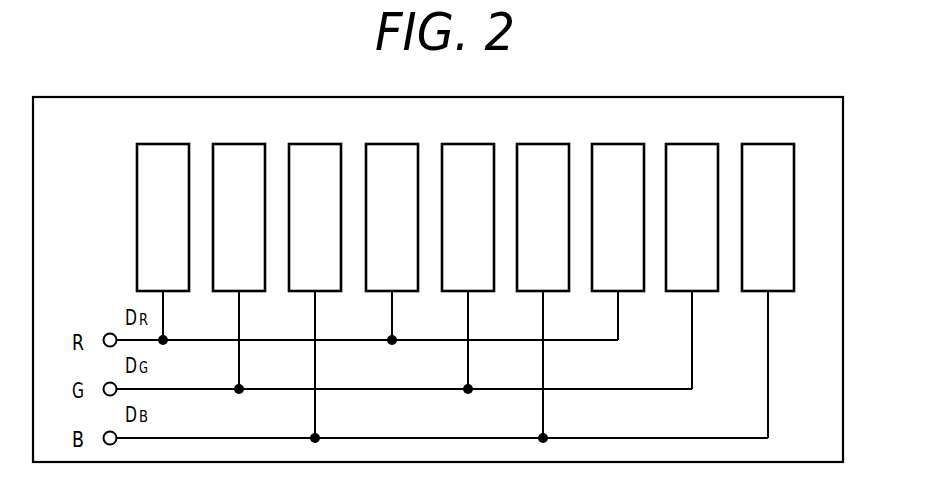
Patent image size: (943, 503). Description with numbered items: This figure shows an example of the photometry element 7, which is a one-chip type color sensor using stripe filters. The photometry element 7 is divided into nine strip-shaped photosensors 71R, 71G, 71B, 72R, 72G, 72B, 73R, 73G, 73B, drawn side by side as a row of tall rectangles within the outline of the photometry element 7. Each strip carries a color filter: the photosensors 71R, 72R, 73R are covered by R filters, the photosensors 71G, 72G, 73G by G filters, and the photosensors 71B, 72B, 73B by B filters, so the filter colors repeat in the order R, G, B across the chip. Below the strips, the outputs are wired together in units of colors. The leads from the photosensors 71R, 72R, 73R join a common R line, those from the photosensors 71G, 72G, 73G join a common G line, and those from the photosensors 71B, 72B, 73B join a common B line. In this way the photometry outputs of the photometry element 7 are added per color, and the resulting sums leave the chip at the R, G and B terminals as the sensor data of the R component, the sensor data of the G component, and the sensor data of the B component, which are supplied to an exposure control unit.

The photometry element 7 is at (843, 188).
The strip-shaped photosensor 71R is at (150, 144).
The strip-shaped photosensor 71G is at (226, 144).
The strip-shaped photosensor 71B is at (302, 144).
The strip-shaped photosensor 72R is at (379, 144).
The strip-shaped photosensor 72G is at (455, 144).
The strip-shaped photosensor 72B is at (530, 144).
The strip-shaped photosensor 73R is at (605, 144).
The strip-shaped photosensor 73G is at (679, 144).
The strip-shaped photosensor 73B is at (755, 144).